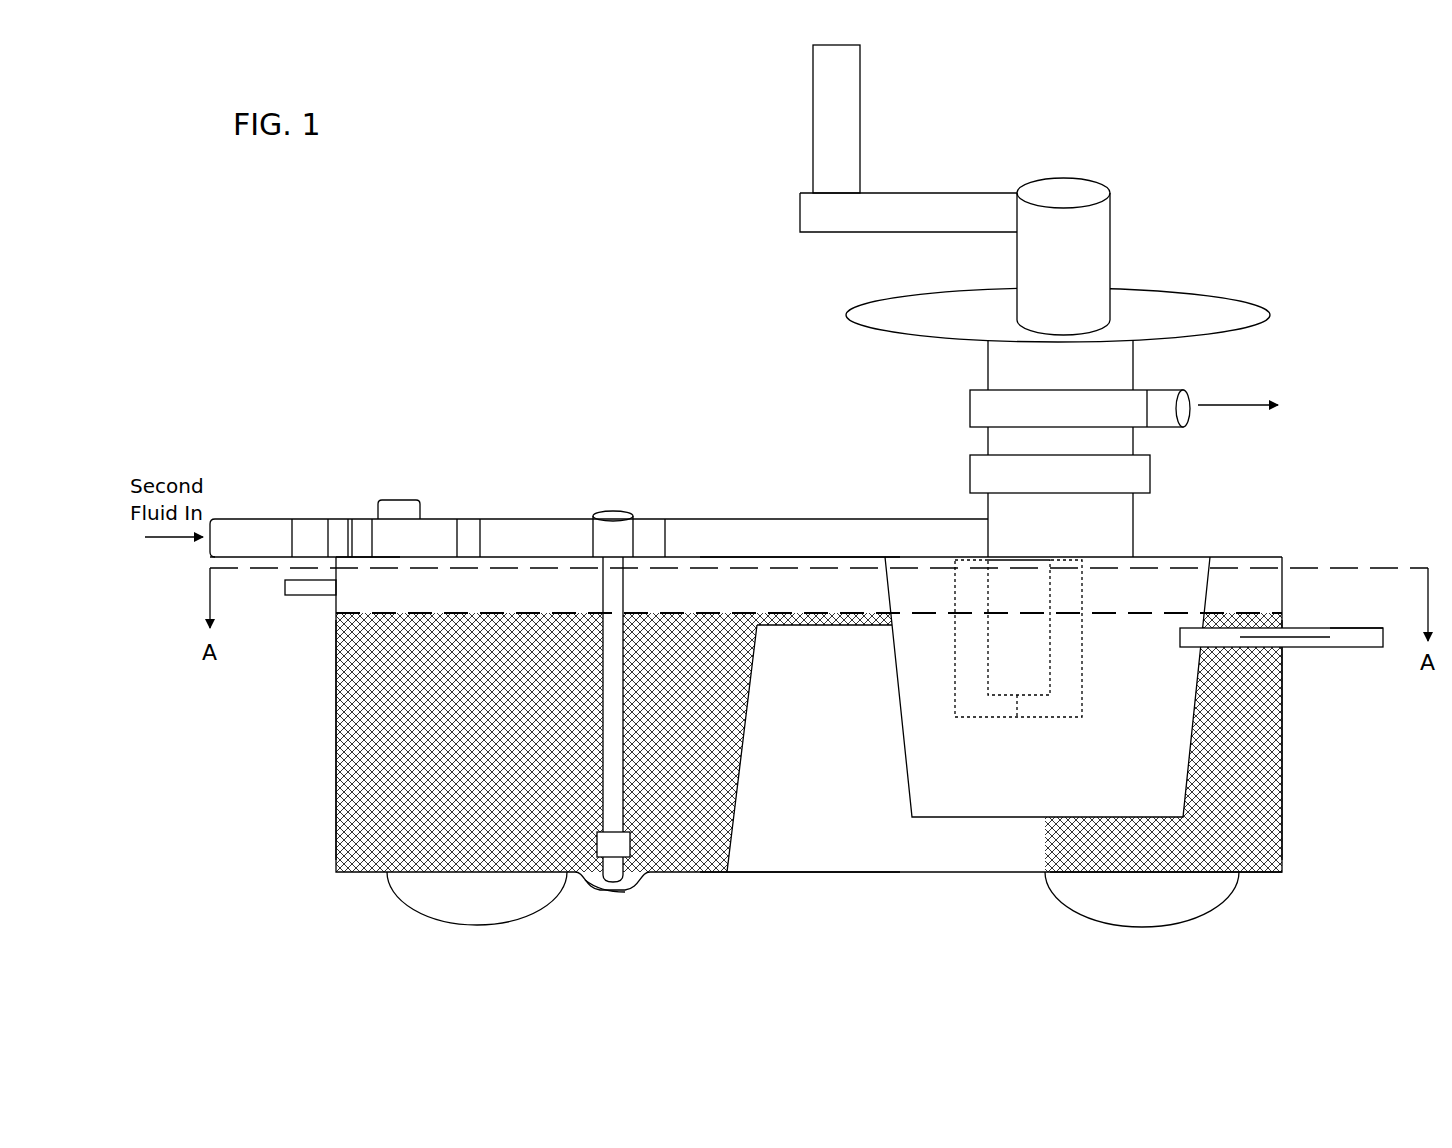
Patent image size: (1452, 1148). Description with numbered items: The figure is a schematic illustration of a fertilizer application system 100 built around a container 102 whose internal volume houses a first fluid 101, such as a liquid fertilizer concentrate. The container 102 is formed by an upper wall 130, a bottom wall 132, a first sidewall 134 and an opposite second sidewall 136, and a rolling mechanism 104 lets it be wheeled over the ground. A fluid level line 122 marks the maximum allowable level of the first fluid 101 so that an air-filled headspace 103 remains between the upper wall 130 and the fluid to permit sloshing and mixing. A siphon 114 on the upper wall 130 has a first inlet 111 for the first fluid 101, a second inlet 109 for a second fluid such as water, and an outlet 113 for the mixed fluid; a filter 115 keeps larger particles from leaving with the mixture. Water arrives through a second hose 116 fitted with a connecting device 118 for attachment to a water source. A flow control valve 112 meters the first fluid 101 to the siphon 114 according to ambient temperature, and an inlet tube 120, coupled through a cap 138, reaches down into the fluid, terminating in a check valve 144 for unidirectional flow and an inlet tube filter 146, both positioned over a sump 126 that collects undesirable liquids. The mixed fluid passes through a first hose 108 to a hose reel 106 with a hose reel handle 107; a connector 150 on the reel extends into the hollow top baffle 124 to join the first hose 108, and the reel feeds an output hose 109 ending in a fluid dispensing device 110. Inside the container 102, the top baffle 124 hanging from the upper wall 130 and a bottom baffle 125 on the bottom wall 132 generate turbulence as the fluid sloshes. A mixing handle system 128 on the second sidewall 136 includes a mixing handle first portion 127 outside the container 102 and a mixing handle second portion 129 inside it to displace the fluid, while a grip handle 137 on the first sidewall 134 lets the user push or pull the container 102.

The fertilizer application system 100 is at (1272, 160).
The first fluid 101 is at (1166, 848).
The container 102 is at (336, 762).
The headspace 103 is at (368, 579).
The rolling mechanism 104 is at (813, 899).
The hose reel 106 is at (848, 316).
The hose reel handle 107 is at (813, 112).
The first hose 108 is at (908, 518).
The output hose 109 is at (1140, 490).
The fluid dispensing device 110 is at (1180, 426).
The first inlet 111 is at (470, 530).
The flow control valve 112 is at (609, 511).
The outlet 113 is at (667, 533).
The siphon 114 is at (544, 518).
The filter 115 is at (365, 519).
The second hose 116 is at (258, 530).
The connecting device 118 is at (310, 519).
The inlet tube 120 is at (603, 588).
The fluid level line 122 is at (420, 612).
The top baffle 124 is at (1000, 800).
The bottom baffle 125 is at (893, 842).
The sump 126 is at (602, 890).
The mixing handle first portion 127 is at (1325, 648).
The mixing handle system 128 is at (1340, 627).
The mixing handle second portion 129 is at (1240, 637).
The upper wall 130 is at (808, 555).
The bottom wall 132 is at (800, 875).
The first sidewall 134 is at (336, 712).
The second sidewall 136 is at (1280, 720).
The grip handle 137 is at (283, 598).
The cap 138 is at (404, 500).
The check valve 144 is at (597, 845).
The inlet tube filter 146 is at (633, 866).
The connector 150 is at (1033, 717).